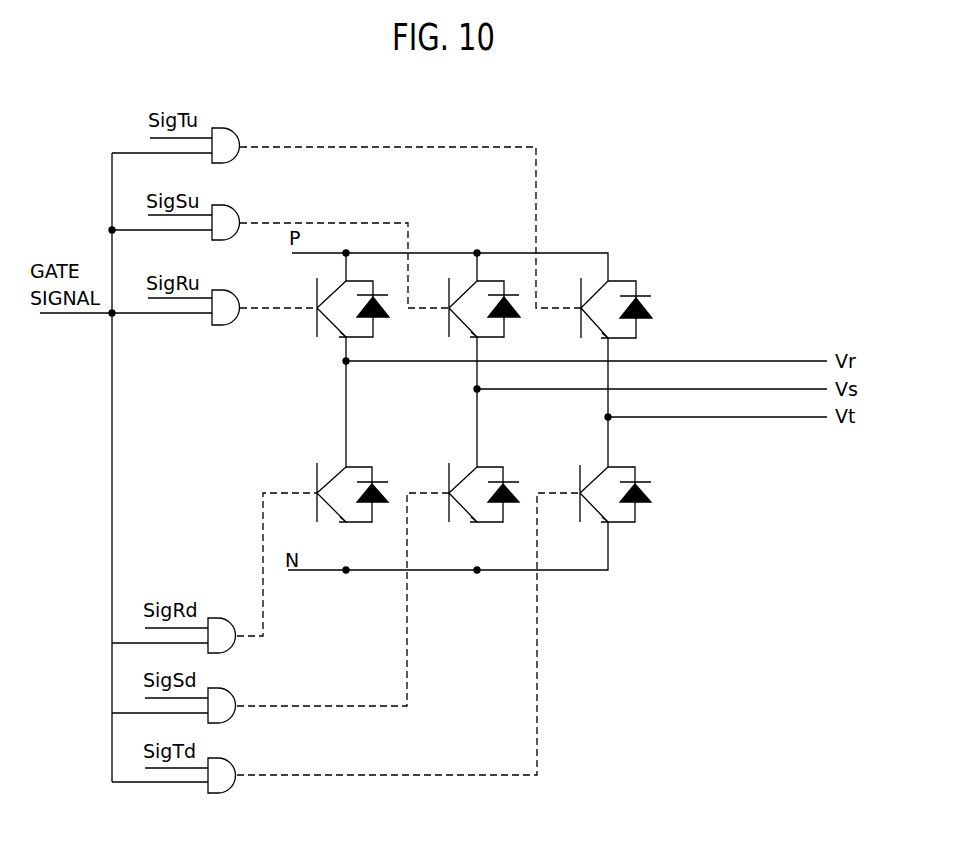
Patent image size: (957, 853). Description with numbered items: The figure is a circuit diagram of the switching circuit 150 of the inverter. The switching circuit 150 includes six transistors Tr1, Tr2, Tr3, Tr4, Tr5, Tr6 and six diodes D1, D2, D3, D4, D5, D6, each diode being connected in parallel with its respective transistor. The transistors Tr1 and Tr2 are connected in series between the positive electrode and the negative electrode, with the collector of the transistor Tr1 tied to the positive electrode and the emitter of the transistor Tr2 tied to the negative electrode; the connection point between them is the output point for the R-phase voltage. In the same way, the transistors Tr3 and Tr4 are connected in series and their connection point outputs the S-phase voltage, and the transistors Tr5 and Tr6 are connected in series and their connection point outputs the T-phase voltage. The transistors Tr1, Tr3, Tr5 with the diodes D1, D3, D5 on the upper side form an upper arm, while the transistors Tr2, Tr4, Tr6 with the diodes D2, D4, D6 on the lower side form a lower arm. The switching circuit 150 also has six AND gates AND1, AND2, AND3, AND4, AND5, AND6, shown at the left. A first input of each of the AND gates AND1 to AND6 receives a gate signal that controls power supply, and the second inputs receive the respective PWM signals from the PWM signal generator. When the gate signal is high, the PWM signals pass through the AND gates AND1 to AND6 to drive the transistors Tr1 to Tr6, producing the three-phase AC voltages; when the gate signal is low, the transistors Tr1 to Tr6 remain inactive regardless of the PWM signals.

The switching circuit 150 is at (628, 141).
The AND gate AND1 is at (233, 130).
The AND gate AND2 is at (233, 207).
The AND gate AND3 is at (233, 292).
The AND gate AND4 is at (230, 651).
The AND gate AND5 is at (230, 721).
The AND gate AND6 is at (230, 791).
The transistor Tr1 is at (315, 315).
The transistor Tr2 is at (314, 503).
The transistor Tr3 is at (447, 315).
The transistor Tr4 is at (455, 505).
The transistor Tr5 is at (577, 315).
The transistor Tr6 is at (586, 505).
The diode D1 is at (375, 311).
The diode D2 is at (374, 488).
The diode D3 is at (506, 311).
The diode D4 is at (504, 488).
The diode D5 is at (637, 311).
The diode D6 is at (637, 488).